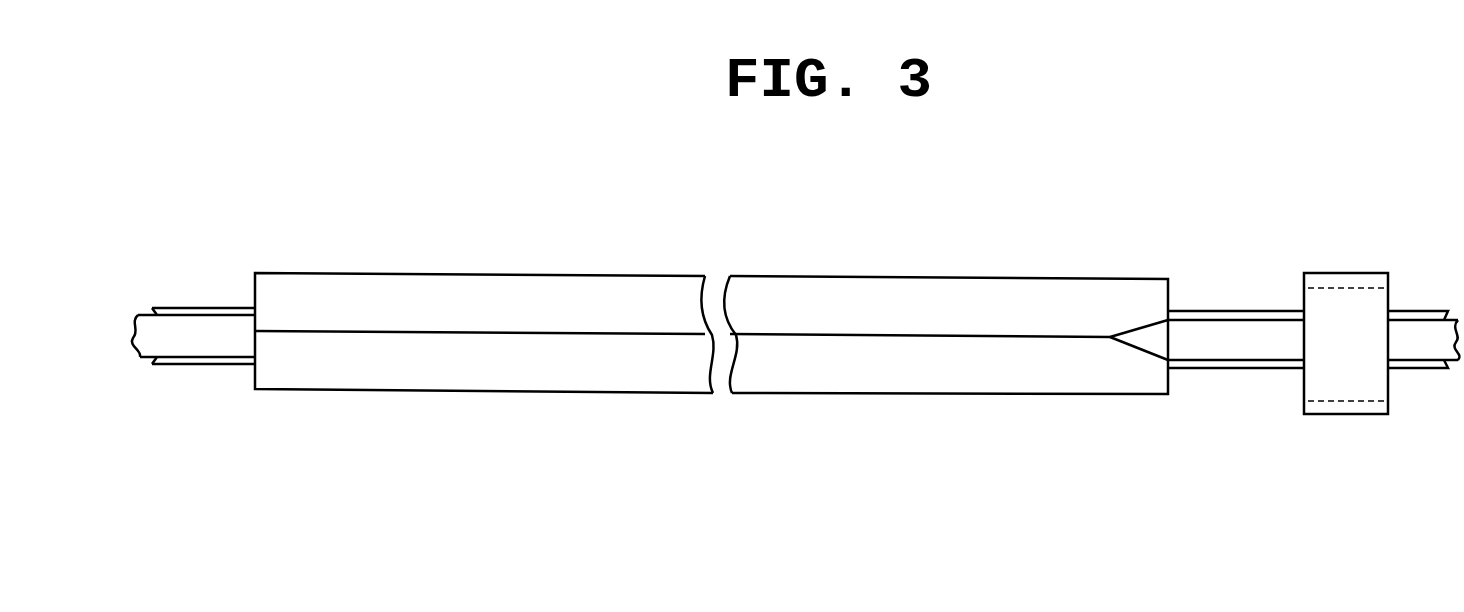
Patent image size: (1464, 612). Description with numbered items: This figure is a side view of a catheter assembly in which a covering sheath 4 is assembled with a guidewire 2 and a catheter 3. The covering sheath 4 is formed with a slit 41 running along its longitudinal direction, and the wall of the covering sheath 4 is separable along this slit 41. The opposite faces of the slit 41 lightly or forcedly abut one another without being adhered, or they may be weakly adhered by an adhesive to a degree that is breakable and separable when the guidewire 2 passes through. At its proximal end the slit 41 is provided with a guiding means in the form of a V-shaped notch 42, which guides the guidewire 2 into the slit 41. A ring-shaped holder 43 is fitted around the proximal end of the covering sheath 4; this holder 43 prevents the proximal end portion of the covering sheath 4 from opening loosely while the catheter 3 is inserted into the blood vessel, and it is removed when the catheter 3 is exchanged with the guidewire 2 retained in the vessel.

The guidewire 2 is at (204, 340).
The catheter 3 is at (202, 312).
The covering sheath 4 is at (577, 300).
The slit 41 is at (497, 336).
The V-shaped notch 42 is at (1147, 349).
The ring-shaped holder 43 is at (1352, 383).